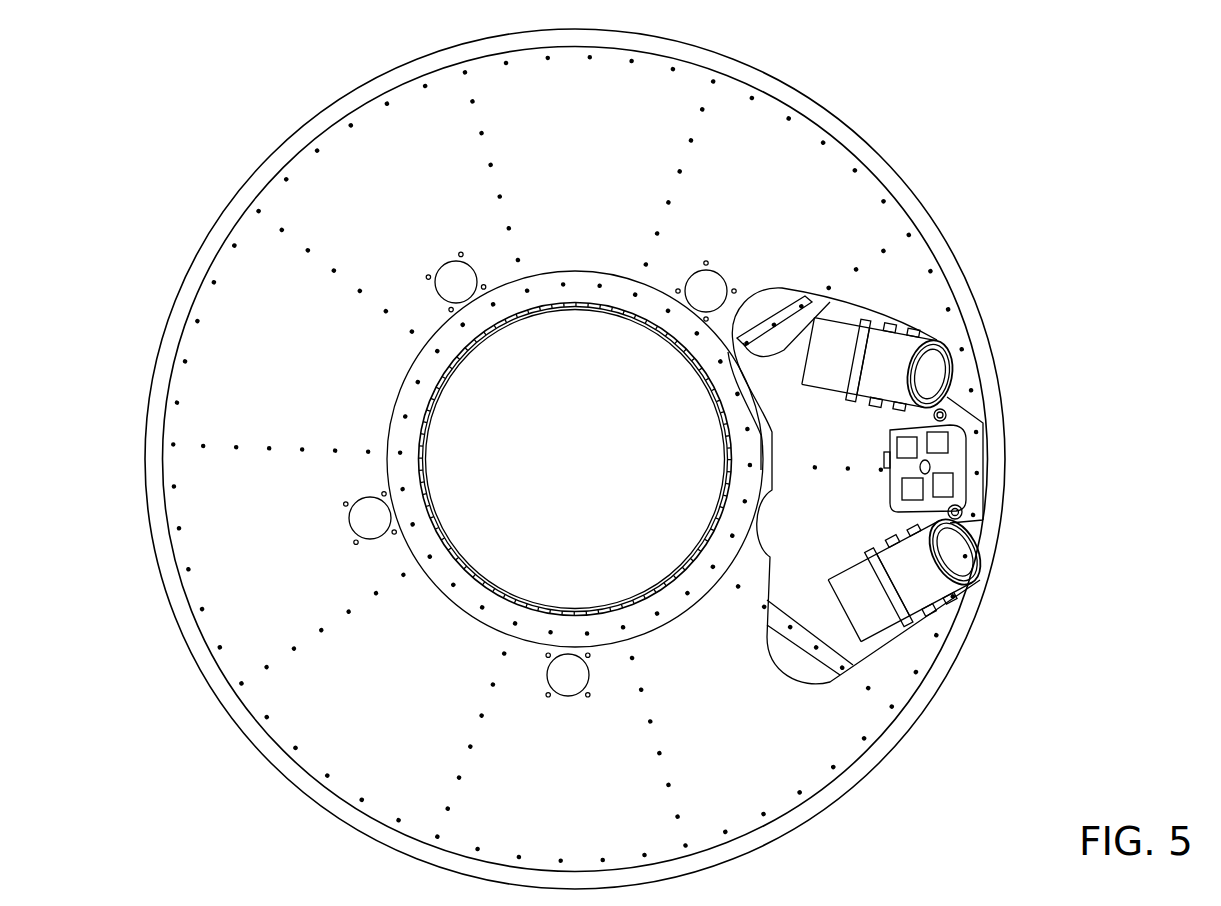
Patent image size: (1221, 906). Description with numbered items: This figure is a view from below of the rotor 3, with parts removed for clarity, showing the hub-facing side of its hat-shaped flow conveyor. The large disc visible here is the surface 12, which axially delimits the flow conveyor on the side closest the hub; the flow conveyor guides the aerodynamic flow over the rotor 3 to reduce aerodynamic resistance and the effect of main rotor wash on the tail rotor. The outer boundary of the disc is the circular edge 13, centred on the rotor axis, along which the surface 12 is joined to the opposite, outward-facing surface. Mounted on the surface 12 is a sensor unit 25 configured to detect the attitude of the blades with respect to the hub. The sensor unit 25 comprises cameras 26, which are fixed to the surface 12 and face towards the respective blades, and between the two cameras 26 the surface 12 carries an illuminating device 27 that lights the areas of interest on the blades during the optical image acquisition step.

The rotor 3 is at (978, 187).
The surface 12 is at (753, 158).
The circular edge 13 is at (913, 713).
The sensor unit 25 is at (841, 295).
The cameras 26 is at (920, 342).
The illuminating device 27 is at (948, 462).